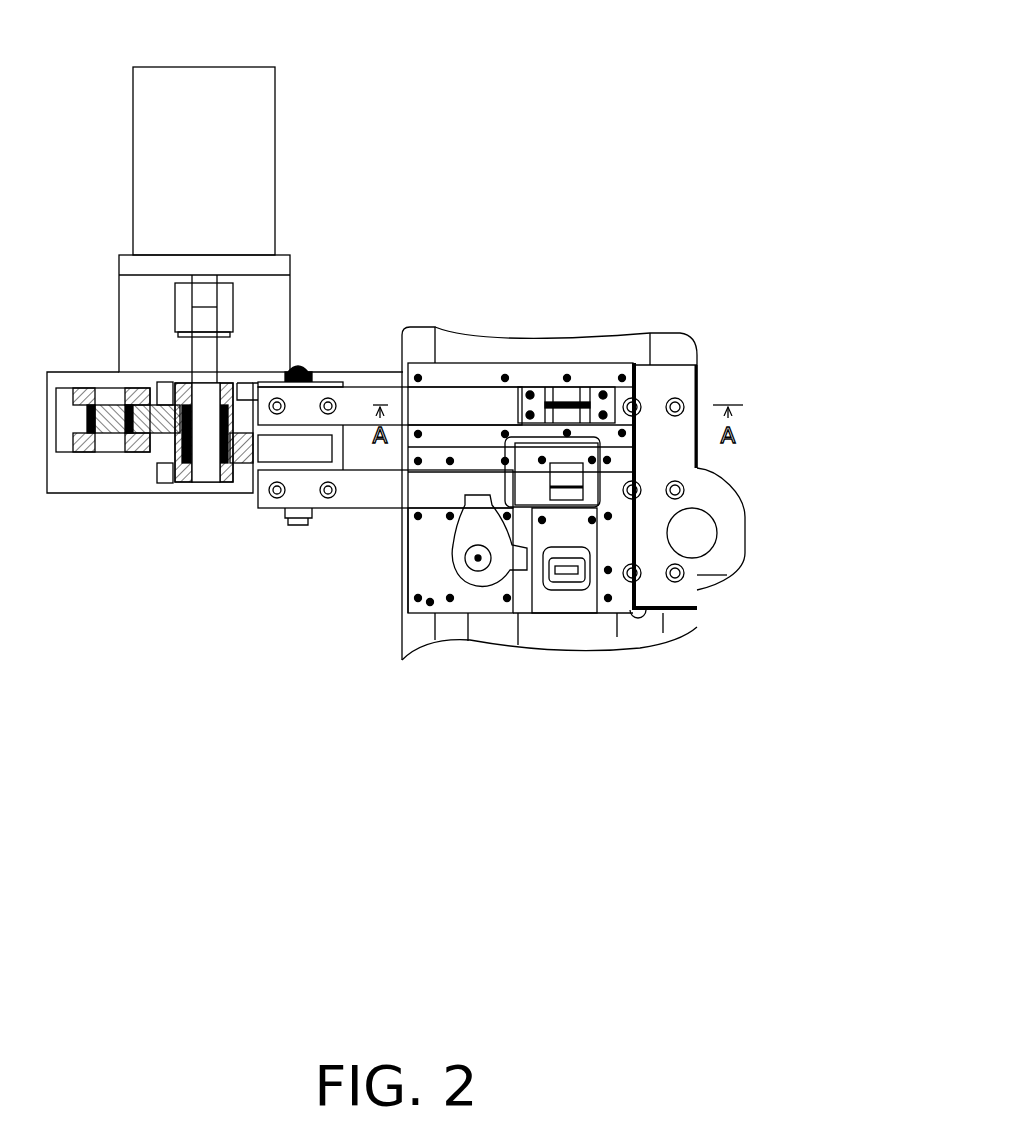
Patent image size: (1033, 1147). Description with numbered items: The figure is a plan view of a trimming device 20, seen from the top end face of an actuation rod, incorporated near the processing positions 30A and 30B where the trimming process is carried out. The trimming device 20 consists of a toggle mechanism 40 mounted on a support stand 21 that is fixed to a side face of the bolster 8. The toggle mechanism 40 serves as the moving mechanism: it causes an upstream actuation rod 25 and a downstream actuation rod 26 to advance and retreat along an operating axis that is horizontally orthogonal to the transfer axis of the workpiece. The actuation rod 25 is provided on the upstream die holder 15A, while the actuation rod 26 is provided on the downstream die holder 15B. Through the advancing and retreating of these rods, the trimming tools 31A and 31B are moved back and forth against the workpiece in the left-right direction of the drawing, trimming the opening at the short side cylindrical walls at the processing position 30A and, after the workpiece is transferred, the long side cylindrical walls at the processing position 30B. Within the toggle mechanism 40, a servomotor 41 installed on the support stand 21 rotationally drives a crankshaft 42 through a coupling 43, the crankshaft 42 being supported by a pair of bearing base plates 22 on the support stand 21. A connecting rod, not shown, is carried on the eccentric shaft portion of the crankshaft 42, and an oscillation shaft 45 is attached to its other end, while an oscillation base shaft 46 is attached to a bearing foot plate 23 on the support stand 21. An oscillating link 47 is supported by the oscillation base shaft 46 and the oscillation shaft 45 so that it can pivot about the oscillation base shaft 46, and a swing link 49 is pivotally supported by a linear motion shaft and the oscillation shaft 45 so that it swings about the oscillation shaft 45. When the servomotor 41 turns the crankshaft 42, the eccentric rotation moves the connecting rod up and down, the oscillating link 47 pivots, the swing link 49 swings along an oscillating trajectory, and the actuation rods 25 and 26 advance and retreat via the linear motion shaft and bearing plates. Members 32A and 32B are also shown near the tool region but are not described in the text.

The trimming device 20 is at (541, 107).
The servomotor 41 is at (263, 222).
The support stand 21 is at (282, 327).
The coupling 43 is at (223, 317).
The crankshaft 42 is at (213, 372).
The toggle mechanism 40 is at (100, 498).
The oscillation base shaft 46 is at (105, 443).
The bearing foot plate 23 is at (82, 398).
The oscillating link 47 is at (168, 428).
The bearing base plate 22 is at (165, 390).
The oscillation shaft 45 is at (206, 470).
The swing link 49 is at (237, 455).
The actuation rod 25 is at (357, 400).
The actuation rod 26 is at (365, 493).
The bolster 8 is at (410, 623).
The upstream die holder 15A is at (458, 377).
The downstream die holder 15B is at (467, 603).
The trimming tool 31A is at (545, 398).
The trimming tool 31B is at (587, 393).
The processing position 30A is at (648, 415).
The processing position 30B is at (644, 521).
The first slider 32A is at (570, 473).
The second slider 32B is at (565, 507).